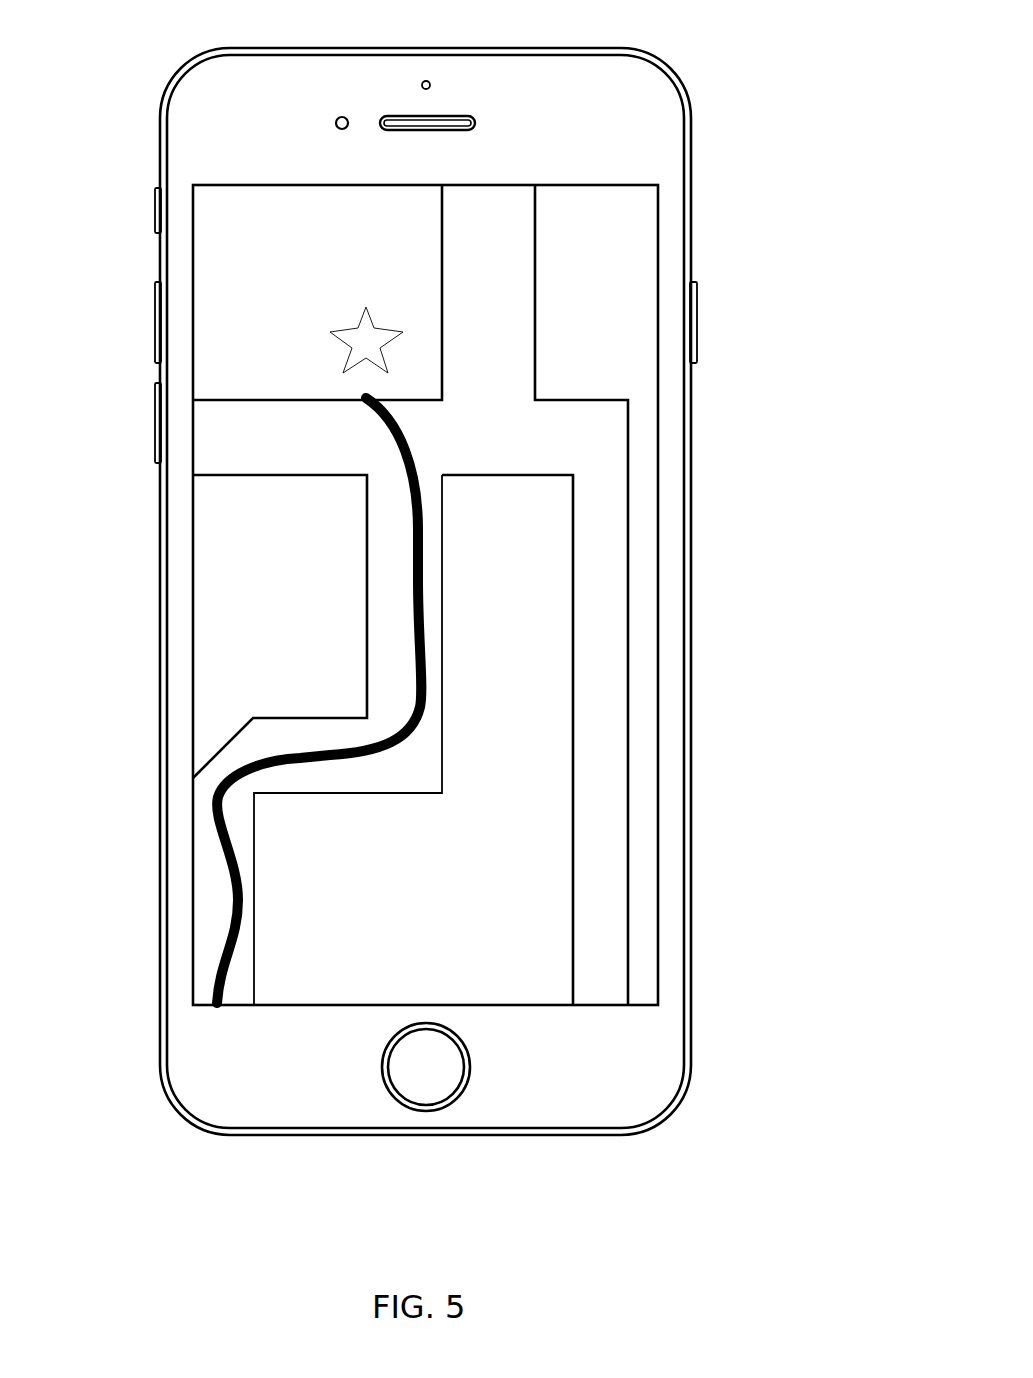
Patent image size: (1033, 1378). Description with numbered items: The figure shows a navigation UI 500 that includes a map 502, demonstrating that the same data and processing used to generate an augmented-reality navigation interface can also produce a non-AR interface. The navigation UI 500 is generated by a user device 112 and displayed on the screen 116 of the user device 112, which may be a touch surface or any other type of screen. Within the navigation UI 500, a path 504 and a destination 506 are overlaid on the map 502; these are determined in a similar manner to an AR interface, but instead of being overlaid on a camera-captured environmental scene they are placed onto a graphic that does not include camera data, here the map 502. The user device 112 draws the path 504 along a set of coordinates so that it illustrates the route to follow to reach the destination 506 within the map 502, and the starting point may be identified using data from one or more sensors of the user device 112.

The user device 112 is at (688, 98).
The screen 116 is at (658, 495).
The navigation UI 500 is at (628, 293).
The map 502 is at (253, 437).
The path 504 is at (250, 760).
The destination 506 is at (366, 307).